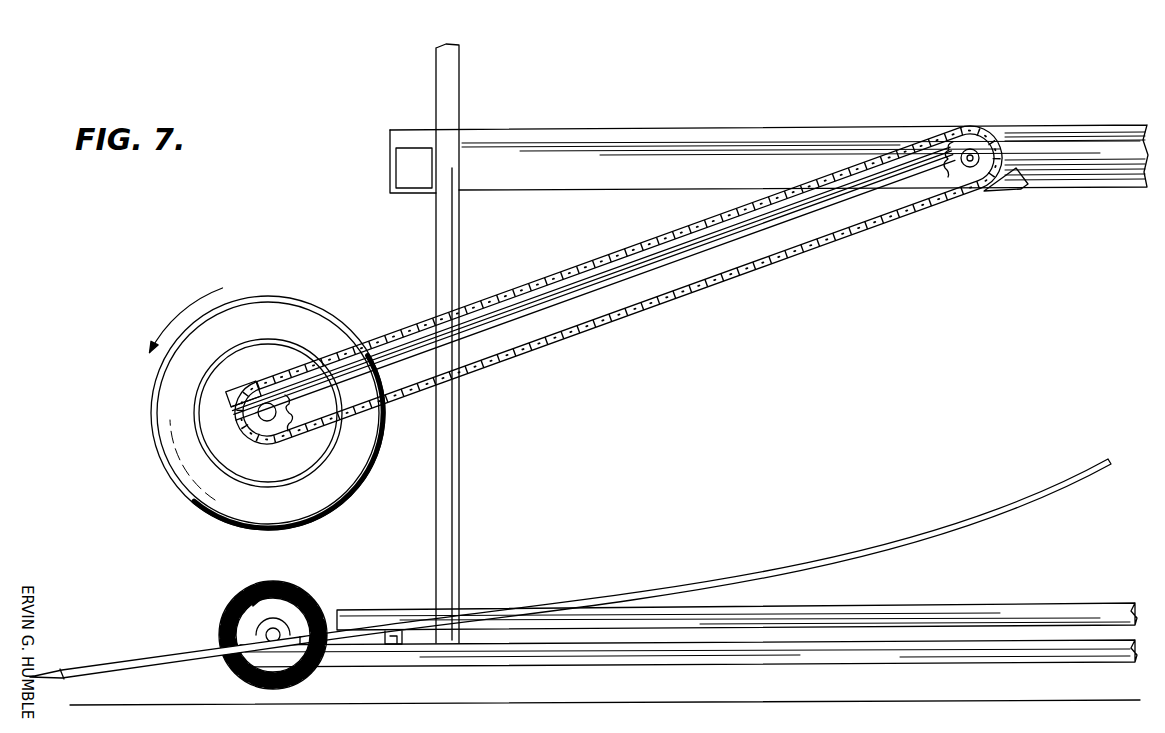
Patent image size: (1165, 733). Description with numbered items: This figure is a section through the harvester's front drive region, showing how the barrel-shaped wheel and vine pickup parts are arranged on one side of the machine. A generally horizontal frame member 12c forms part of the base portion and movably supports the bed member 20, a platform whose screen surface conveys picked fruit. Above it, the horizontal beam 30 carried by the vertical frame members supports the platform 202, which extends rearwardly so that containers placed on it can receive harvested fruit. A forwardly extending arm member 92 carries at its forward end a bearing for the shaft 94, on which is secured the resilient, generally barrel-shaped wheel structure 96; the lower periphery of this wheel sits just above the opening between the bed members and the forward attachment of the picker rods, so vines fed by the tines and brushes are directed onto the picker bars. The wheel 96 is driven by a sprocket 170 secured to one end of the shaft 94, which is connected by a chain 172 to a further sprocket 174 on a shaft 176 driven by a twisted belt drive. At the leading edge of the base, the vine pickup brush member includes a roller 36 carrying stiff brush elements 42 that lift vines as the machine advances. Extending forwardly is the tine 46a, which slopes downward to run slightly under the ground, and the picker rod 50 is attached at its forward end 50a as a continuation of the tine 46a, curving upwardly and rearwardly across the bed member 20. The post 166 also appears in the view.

The horizontal beam 30 is at (390, 171).
The platform 202 is at (657, 133).
The sprocket 174 is at (975, 148).
The shaft 176 is at (969, 168).
The arm member 92 is at (1008, 187).
The chain 172 is at (499, 300).
The shaft 94 is at (265, 404).
The sprocket 170 is at (276, 425).
The barrel-shaped wheel structure 96 is at (148, 451).
The vertical post 166 is at (436, 514).
The picker rod 50 is at (779, 572).
The bed member 20 is at (940, 598).
The forward end of picker rod 50a is at (302, 633).
The brush elements 42 is at (252, 588).
The roller 36 is at (226, 611).
The tine 46a is at (124, 660).
The horizontal frame member 12c is at (410, 656).